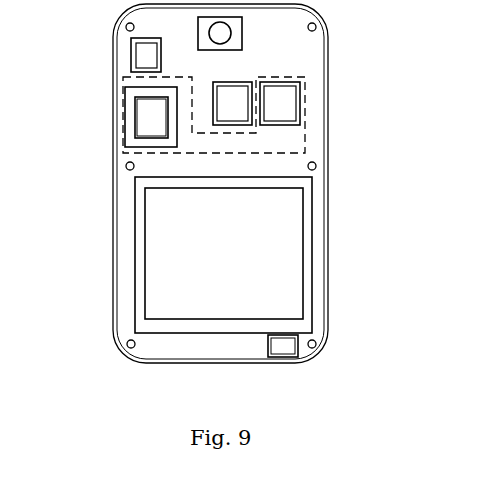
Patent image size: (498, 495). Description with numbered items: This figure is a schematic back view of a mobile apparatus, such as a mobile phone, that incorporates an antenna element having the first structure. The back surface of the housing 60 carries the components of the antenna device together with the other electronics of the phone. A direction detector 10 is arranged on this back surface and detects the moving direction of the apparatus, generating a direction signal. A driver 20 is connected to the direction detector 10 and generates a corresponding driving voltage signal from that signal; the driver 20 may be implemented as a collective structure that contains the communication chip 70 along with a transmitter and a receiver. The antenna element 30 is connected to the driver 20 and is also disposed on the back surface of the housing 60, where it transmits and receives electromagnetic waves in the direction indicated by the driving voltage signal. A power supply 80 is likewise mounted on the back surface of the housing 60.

The direction detector 10 is at (132, 55).
The driver 20 is at (300, 78).
The antenna element 30 is at (310, 347).
The housing 60 is at (327, 232).
The communication chip 70 is at (288, 103).
The power supply 80 is at (303, 300).